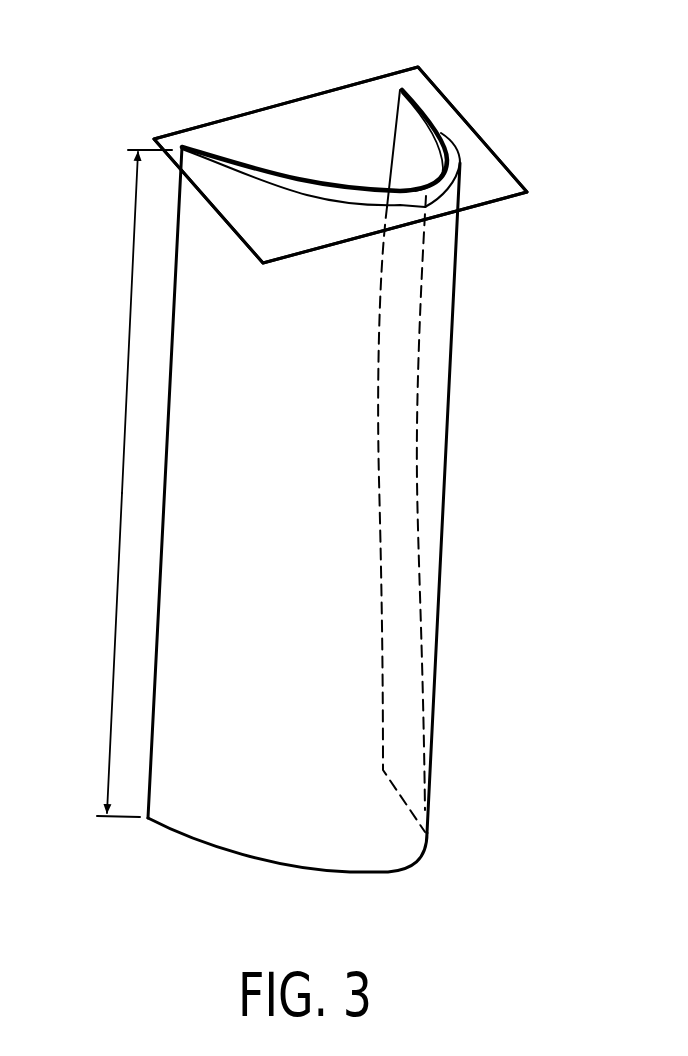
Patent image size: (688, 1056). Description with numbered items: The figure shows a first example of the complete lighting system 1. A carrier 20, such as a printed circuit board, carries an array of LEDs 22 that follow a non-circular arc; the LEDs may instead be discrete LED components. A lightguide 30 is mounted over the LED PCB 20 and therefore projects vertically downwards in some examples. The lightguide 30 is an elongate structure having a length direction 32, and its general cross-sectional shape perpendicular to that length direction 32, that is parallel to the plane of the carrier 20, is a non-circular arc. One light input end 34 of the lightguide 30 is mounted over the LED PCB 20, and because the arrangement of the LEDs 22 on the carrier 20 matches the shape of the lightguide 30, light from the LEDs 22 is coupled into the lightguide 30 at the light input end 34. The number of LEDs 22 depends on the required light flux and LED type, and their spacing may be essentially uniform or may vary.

The lighting system 1 is at (114, 84).
The carrier 20 is at (443, 95).
The array of LEDs 22 is at (340, 165).
The lightguide 30 is at (445, 512).
The length direction 32 is at (122, 484).
The light input end 34 is at (450, 148).